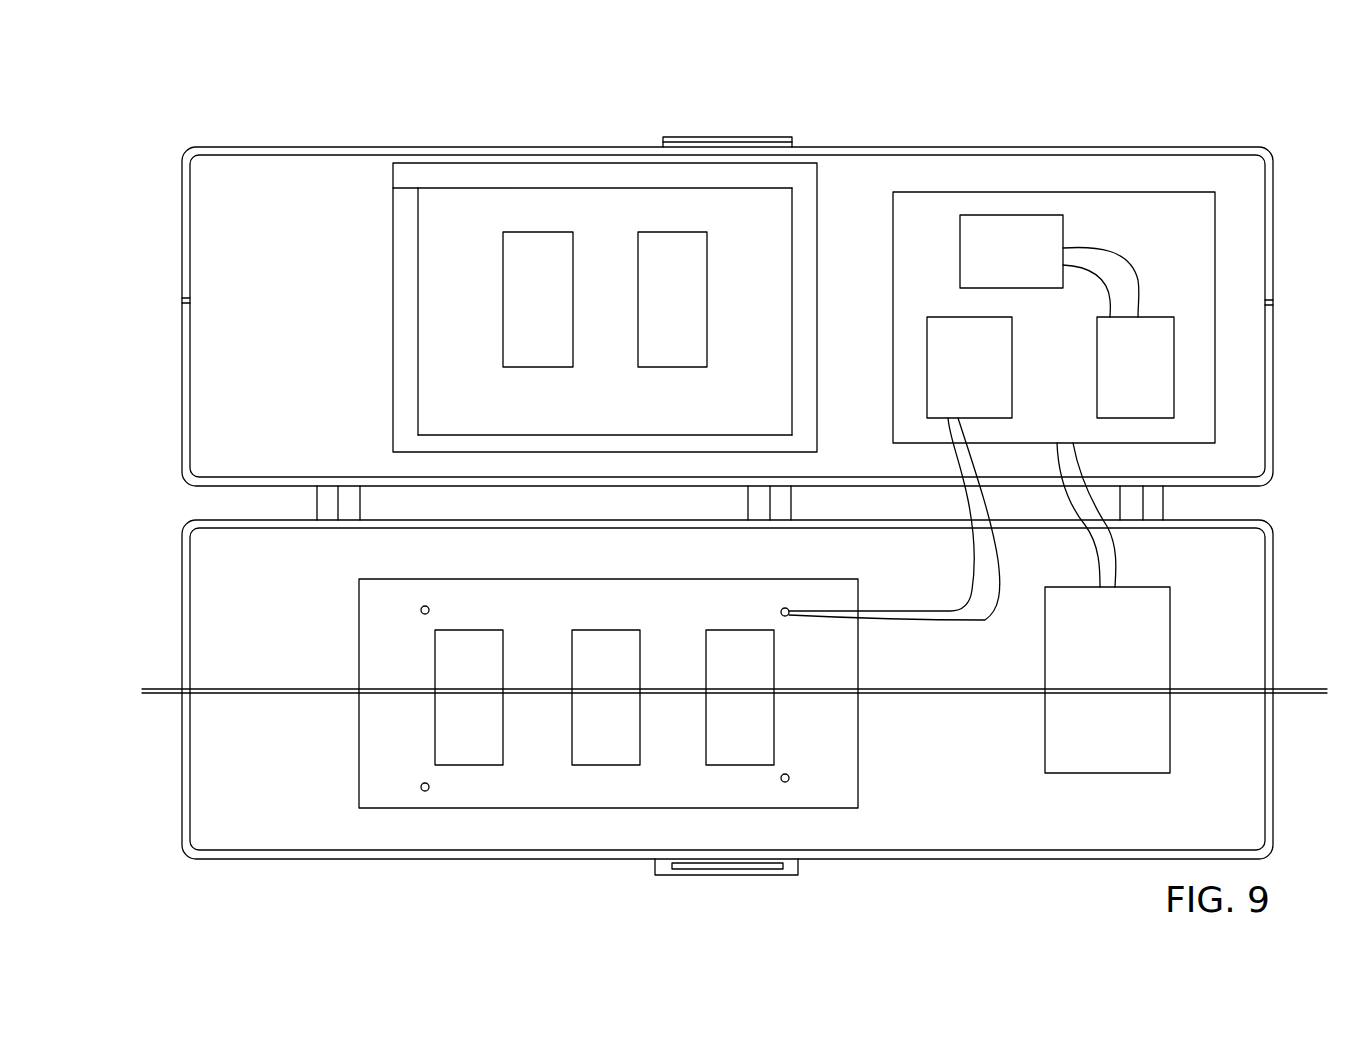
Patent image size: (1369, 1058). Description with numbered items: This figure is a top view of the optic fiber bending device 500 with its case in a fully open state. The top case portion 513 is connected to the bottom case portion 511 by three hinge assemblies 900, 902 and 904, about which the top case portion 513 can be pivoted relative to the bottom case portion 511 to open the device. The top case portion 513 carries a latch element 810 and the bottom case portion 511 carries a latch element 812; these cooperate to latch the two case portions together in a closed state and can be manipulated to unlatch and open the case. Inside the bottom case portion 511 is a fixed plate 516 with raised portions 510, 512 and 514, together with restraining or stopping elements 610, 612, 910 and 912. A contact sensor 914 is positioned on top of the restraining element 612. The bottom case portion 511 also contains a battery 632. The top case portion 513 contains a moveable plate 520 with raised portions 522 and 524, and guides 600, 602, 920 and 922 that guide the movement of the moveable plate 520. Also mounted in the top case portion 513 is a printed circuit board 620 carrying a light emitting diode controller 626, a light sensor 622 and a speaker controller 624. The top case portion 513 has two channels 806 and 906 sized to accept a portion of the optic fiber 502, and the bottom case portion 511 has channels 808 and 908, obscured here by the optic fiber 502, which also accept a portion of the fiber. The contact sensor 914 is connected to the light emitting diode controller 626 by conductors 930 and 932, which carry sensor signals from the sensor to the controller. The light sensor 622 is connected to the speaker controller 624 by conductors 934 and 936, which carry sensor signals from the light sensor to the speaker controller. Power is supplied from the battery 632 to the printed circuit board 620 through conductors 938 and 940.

The optic fiber bending device 500 is at (1290, 116).
The latch element 810 is at (717, 137).
The latch element 812 is at (655, 868).
The channel 806 is at (183, 296).
The channel 808 is at (183, 688).
The top case portion 513 is at (183, 380).
The bottom case portion 511 is at (183, 845).
The channel 906 is at (1273, 305).
The channel 908 is at (1273, 690).
The guide 920 is at (500, 170).
The guide 922 is at (395, 440).
The guide 600 is at (395, 325).
The guide 602 is at (810, 312).
The moveable plate 520 is at (701, 407).
The raised portion 522 is at (538, 299).
The raised portion 524 is at (672, 299).
The printed circuit board 620 is at (1054, 317).
The light sensor 622 is at (1011, 251).
The speaker controller 624 is at (1135, 367).
The light emitting diode controller 626 is at (969, 367).
The conductor 934 is at (1128, 268).
The conductor 936 is at (1092, 288).
The hinge assembly 900 is at (360, 488).
The hinge assembly 902 is at (793, 504).
The hinge assembly 904 is at (1165, 515).
The optic fiber 502 is at (150, 698).
The fixed plate 516 is at (608, 693).
The raised portion 510 is at (469, 697).
The raised portion 512 is at (606, 697).
The raised portion 514 is at (740, 697).
The restraining element 610 is at (424, 606).
The restraining element 612 is at (785, 608).
The restraining element 910 is at (421, 788).
The restraining element 912 is at (790, 780).
The contact sensor 914 is at (790, 610).
The conductor 930 is at (945, 608).
The conductor 932 is at (955, 620).
The conductor 938 is at (1120, 540).
The conductor 940 is at (1098, 560).
The battery 632 is at (1107, 680).